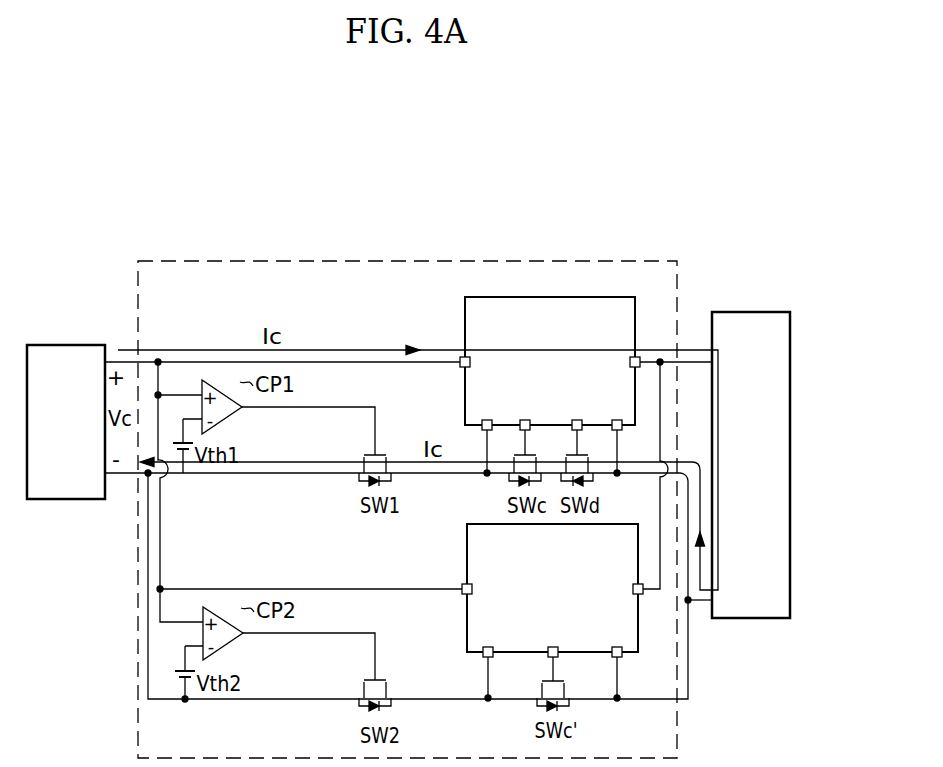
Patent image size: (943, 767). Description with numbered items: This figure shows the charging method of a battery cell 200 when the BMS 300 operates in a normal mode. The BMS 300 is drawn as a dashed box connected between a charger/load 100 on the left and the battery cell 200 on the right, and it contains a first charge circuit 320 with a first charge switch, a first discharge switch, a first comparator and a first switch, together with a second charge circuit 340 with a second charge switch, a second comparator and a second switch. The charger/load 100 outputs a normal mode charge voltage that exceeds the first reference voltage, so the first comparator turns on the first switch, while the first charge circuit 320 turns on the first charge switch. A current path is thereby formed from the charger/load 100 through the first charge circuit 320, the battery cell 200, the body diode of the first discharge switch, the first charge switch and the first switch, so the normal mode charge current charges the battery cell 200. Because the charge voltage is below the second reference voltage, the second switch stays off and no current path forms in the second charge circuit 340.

The charger/load 100 is at (81, 345).
The battery cell 200 is at (763, 312).
The BMS 300 is at (564, 261).
The first charge circuit 320 is at (465, 322).
The second charge circuit 340 is at (467, 547).